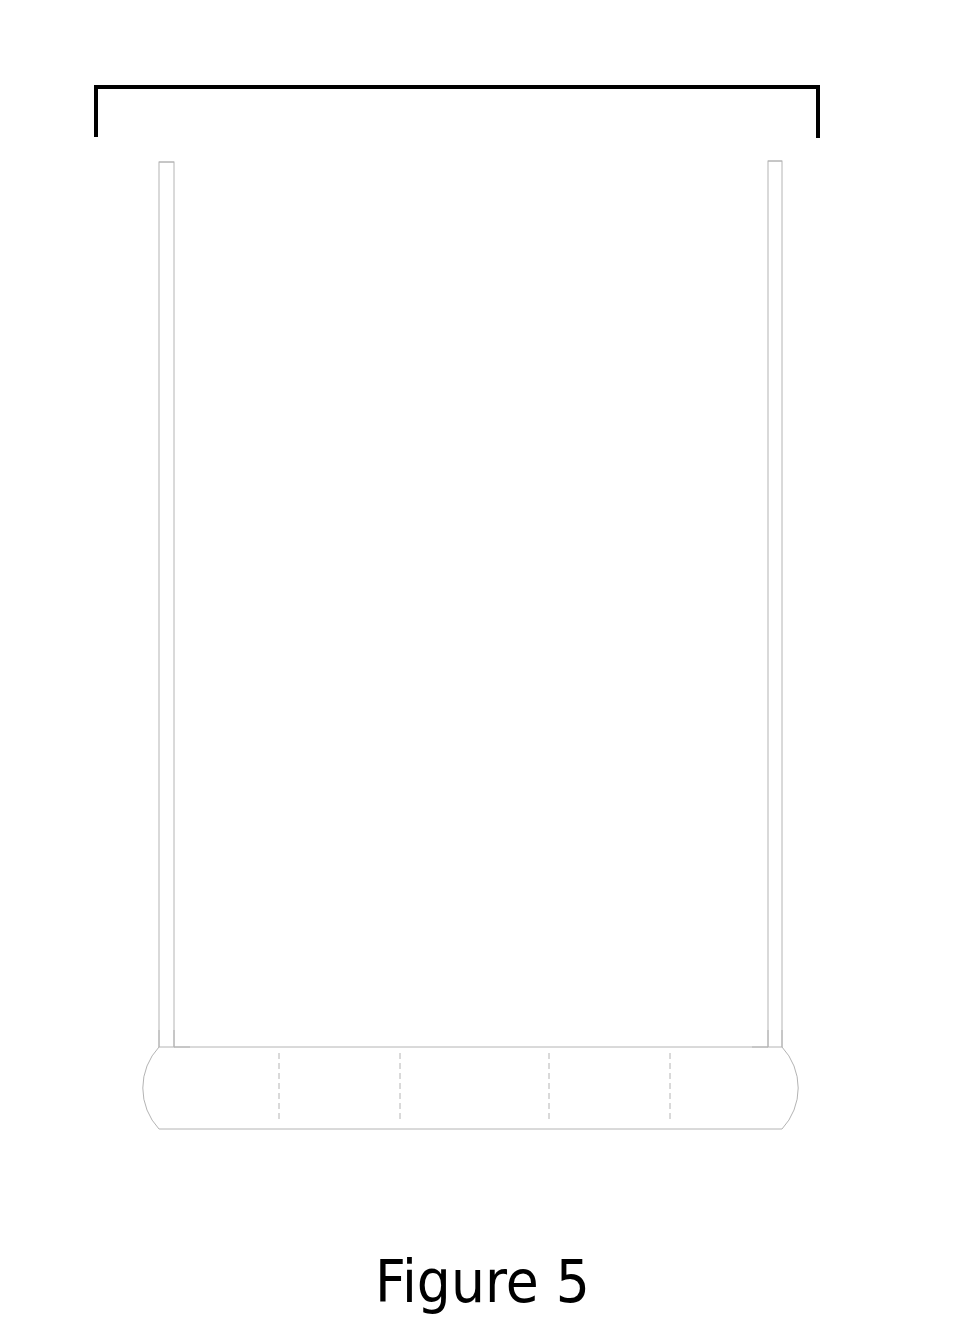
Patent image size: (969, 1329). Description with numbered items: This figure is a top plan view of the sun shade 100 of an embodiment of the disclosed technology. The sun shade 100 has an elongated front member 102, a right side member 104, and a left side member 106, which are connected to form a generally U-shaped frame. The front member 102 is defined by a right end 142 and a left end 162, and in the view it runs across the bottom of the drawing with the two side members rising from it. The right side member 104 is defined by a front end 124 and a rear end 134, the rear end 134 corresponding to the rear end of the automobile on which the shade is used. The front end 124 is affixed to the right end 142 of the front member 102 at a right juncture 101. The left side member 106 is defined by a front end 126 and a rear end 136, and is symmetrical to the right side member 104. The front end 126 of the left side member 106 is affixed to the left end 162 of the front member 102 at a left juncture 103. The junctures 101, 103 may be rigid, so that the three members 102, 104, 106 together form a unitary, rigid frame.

The sun shade 100 is at (459, 87).
The right juncture 101 is at (169, 1044).
The front member 102 is at (381, 1048).
The left juncture 103 is at (772, 1046).
The right side member 104 is at (175, 524).
The left side member 106 is at (770, 453).
The front end 124 is at (189, 1008).
The front end 126 is at (758, 1011).
The rear end 134 is at (173, 167).
The rear end 136 is at (770, 162).
The right end 142 is at (143, 1092).
The left end 162 is at (792, 1085).